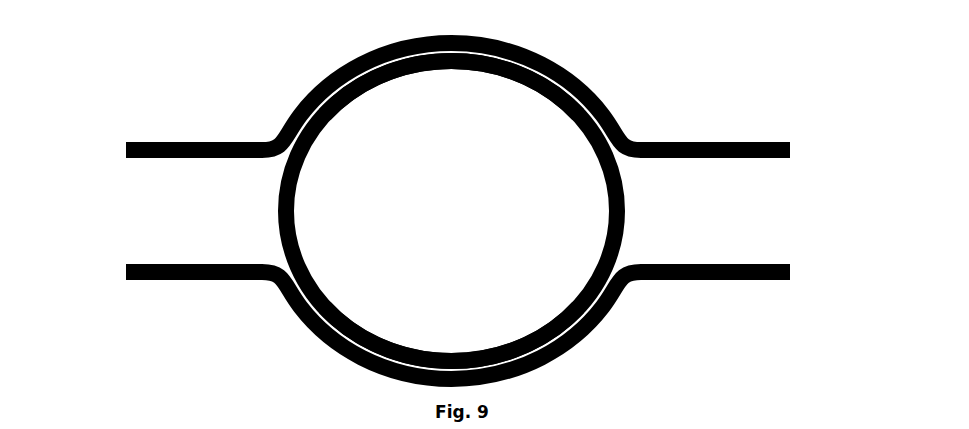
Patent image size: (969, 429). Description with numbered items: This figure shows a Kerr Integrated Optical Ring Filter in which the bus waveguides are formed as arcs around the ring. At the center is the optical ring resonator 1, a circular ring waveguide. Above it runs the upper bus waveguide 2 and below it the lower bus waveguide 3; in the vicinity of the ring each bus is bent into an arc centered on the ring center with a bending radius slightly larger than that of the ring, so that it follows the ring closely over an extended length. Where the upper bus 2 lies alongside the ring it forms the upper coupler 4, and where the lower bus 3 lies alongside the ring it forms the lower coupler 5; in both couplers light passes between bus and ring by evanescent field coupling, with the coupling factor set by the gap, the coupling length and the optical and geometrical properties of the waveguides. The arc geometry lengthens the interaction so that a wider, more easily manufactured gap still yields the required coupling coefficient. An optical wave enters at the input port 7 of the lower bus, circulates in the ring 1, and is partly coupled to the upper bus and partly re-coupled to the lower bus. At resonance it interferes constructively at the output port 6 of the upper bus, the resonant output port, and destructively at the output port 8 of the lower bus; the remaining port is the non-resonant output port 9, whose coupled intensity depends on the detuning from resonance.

The optical ring resonator 1 is at (643, 210).
The upper bus waveguide 2 is at (462, 96).
The lower bus waveguide 3 is at (462, 296).
The upper coupler 4 is at (458, 89).
The lower coupler 5 is at (458, 337).
The output port of the upper bus 6 is at (98, 135).
The input port 7 is at (99, 266).
The output port of the lower bus 8 is at (822, 266).
The non-resonant output port 9 is at (822, 136).